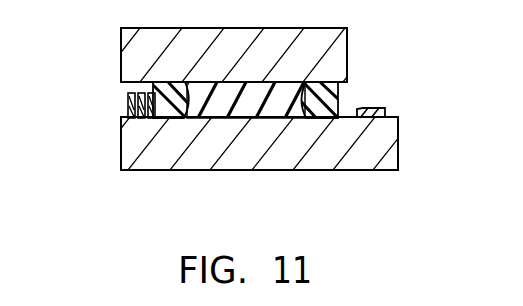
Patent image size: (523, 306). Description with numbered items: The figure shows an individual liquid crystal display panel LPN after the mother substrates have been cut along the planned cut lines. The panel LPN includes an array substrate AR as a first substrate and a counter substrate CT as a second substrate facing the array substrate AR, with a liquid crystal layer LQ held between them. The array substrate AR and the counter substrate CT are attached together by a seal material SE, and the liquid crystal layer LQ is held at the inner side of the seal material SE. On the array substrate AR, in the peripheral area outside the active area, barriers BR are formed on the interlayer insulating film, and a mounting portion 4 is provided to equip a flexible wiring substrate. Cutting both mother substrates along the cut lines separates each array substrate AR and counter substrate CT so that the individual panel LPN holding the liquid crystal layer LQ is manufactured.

The counter substrate CT is at (121, 57).
The array substrate AR is at (121, 151).
The liquid crystal layer LQ is at (244, 110).
The seal material SE is at (171, 107).
The barrier BR is at (158, 127).
The mounting portion 4 is at (372, 108).
The liquid crystal display panel LPN is at (386, 51).